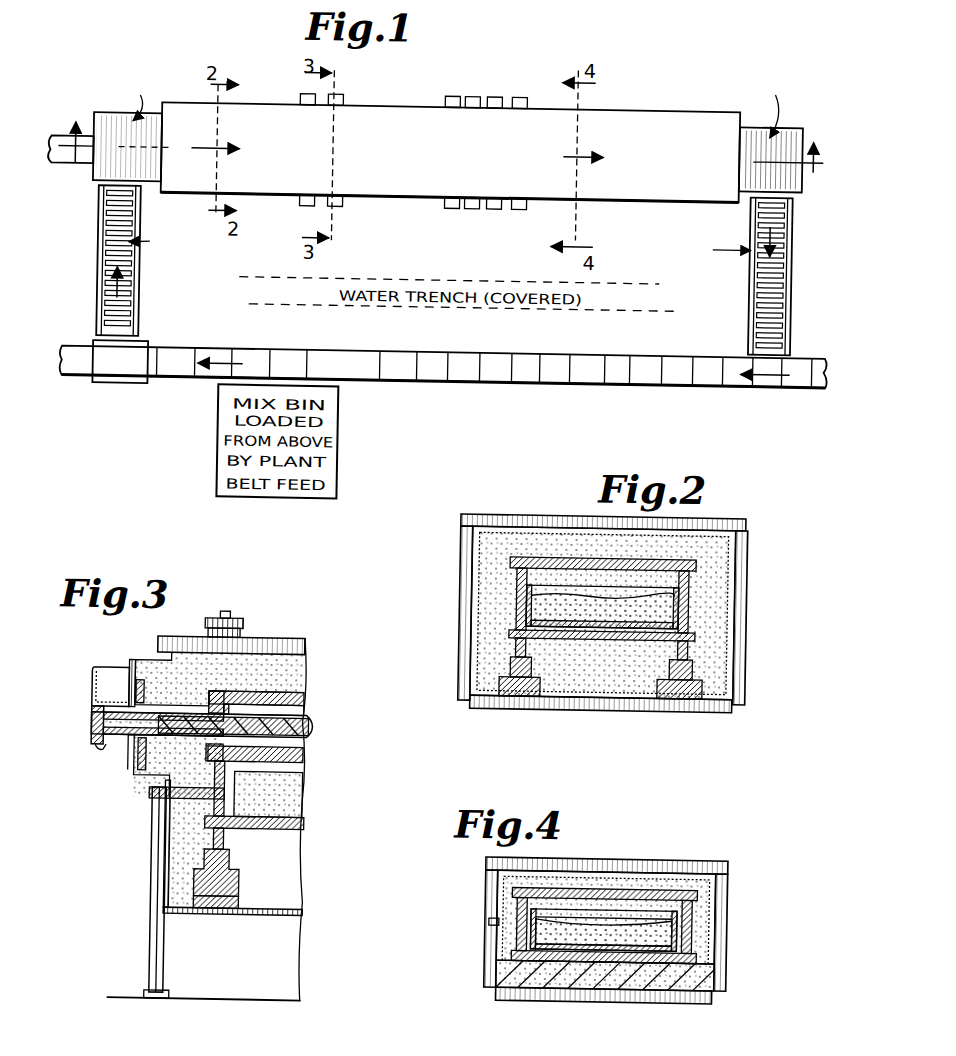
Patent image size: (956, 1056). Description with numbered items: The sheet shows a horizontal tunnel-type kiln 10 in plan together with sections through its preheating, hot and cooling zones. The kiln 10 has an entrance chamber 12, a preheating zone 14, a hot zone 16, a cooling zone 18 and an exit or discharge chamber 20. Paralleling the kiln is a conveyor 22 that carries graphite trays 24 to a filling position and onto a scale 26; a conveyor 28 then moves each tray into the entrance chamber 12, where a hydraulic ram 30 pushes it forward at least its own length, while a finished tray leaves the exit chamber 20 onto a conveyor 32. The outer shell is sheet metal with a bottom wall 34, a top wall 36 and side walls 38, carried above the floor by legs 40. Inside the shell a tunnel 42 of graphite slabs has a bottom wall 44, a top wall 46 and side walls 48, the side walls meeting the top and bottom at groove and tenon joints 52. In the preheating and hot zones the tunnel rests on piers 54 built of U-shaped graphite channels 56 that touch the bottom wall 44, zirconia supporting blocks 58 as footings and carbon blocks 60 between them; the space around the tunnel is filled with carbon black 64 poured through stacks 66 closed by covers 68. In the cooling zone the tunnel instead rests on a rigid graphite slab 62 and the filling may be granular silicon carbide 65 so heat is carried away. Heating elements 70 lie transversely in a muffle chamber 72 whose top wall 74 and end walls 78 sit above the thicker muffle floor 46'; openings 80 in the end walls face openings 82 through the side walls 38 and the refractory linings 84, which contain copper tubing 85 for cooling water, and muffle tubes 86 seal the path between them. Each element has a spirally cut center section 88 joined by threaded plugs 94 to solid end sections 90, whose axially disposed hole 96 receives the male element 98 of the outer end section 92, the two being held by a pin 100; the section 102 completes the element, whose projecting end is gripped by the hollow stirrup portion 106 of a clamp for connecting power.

In FIG. 1, the horizontal tunnel-type kiln 10 is at (409, 120).
In FIG. 1, the entrance chamber 12 is at (144, 168).
In FIG. 1, the preheating zone 14 is at (258, 112).
In FIG. 3, the preheating zone 14 is at (204, 604).
In FIG. 1, the hot zone 16 is at (524, 120).
In FIG. 1, the cooling zone 18 is at (631, 112).
In FIG. 1, the exit or discharge chamber 20 is at (789, 168).
In FIG. 1, the conveyor 22 is at (498, 378).
In FIG. 1, the graphite tray 24 is at (287, 356).
In FIG. 2, the graphite tray 24 is at (676, 612).
In FIG. 4, the graphite tray 24 is at (532, 932).
In FIG. 1, the scale 26 is at (119, 387).
In FIG. 1, the conveyor 28 is at (108, 240).
In FIG. 1, the hydraulic ram 30 is at (70, 165).
In FIG. 1, the conveyor 32 is at (775, 267).
In FIG. 2, the bottom wall 34 is at (594, 700).
In FIG. 3, the bottom wall 34 is at (280, 917).
In FIG. 4, the bottom wall 34 is at (546, 987).
In FIG. 2, the top wall 36 is at (525, 520).
In FIG. 3, the top wall 36 is at (285, 645).
In FIG. 4, the top wall 36 is at (600, 868).
In FIG. 2, the side walls 38 is at (467, 573).
In FIG. 3, the side walls 38 is at (163, 837).
In FIG. 4, the side walls 38 is at (495, 884).
In FIG. 3, the legs 40 is at (161, 945).
In FIG. 2, the tunnel 42 is at (711, 594).
In FIG. 3, the tunnel 42 is at (315, 822).
In FIG. 2, the bottom wall 44 is at (597, 640).
In FIG. 3, the bottom wall 44 is at (301, 829).
In FIG. 4, the bottom wall 44 is at (607, 960).
In FIG. 2, the top wall 46 is at (603, 555).
In FIG. 4, the top wall 46 is at (605, 862).
In FIG. 3, the bottom wall of the muffle 46' is at (284, 767).
In FIG. 2, the side walls 48 is at (516, 592).
In FIG. 3, the side walls 48 is at (205, 808).
In FIG. 4, the side walls 48 is at (694, 932).
In FIG. 2, the joints between the side walls and the top and bottom walls 52 is at (698, 563).
In FIG. 2, the piers 54 is at (489, 669).
In FIG. 3, the piers 54 is at (190, 879).
In FIG. 2, the graphite channels 56 is at (519, 645).
In FIG. 3, the graphite channels 56 is at (229, 839).
In FIG. 2, the supporting blocks 58 is at (503, 686).
In FIG. 3, the supporting blocks 58 is at (239, 905).
In FIG. 2, the carbon blocks 60 is at (534, 665).
In FIG. 3, the carbon blocks 60 is at (232, 880).
In FIG. 4, the rigid graphite slab 62 is at (516, 978).
In FIG. 2, the carbon black 64 is at (490, 552).
In FIG. 3, the carbon black 64 is at (292, 666).
In FIG. 4, the granular silicon carbide 65 is at (704, 908).
In FIG. 3, the stacks 66 is at (243, 629).
In FIG. 3, the covers 68 is at (238, 617).
In FIG. 3, the heating elements 70 is at (326, 724).
In FIG. 3, the muffle chamber 72 is at (288, 708).
In FIG. 3, the top wall 74 is at (287, 694).
In FIG. 3, the end walls 78 is at (215, 750).
In FIG. 3, the openings 80 is at (241, 712).
In FIG. 3, the openings 82 is at (132, 758).
In FIG. 3, the refractory linings 84 is at (139, 685).
In FIG. 3, the copper tubing 85 is at (127, 688).
In FIG. 3, the muffle tubes 86 is at (202, 706).
In FIG. 3, the center section 88 is at (308, 720).
In FIG. 3, the end section 90 is at (206, 735).
In FIG. 3, the end section 92 is at (96, 727).
In FIG. 3, the threaded plugs 94 is at (190, 733).
In FIG. 3, the axially disposed hole 96 is at (152, 736).
In FIG. 3, the male element 98 is at (174, 738).
In FIG. 3, the pin 100 is at (118, 705).
In FIG. 3, the screw 102 is at (312, 731).
In FIG. 1, the hollow stirrup portion 106 is at (339, 98).